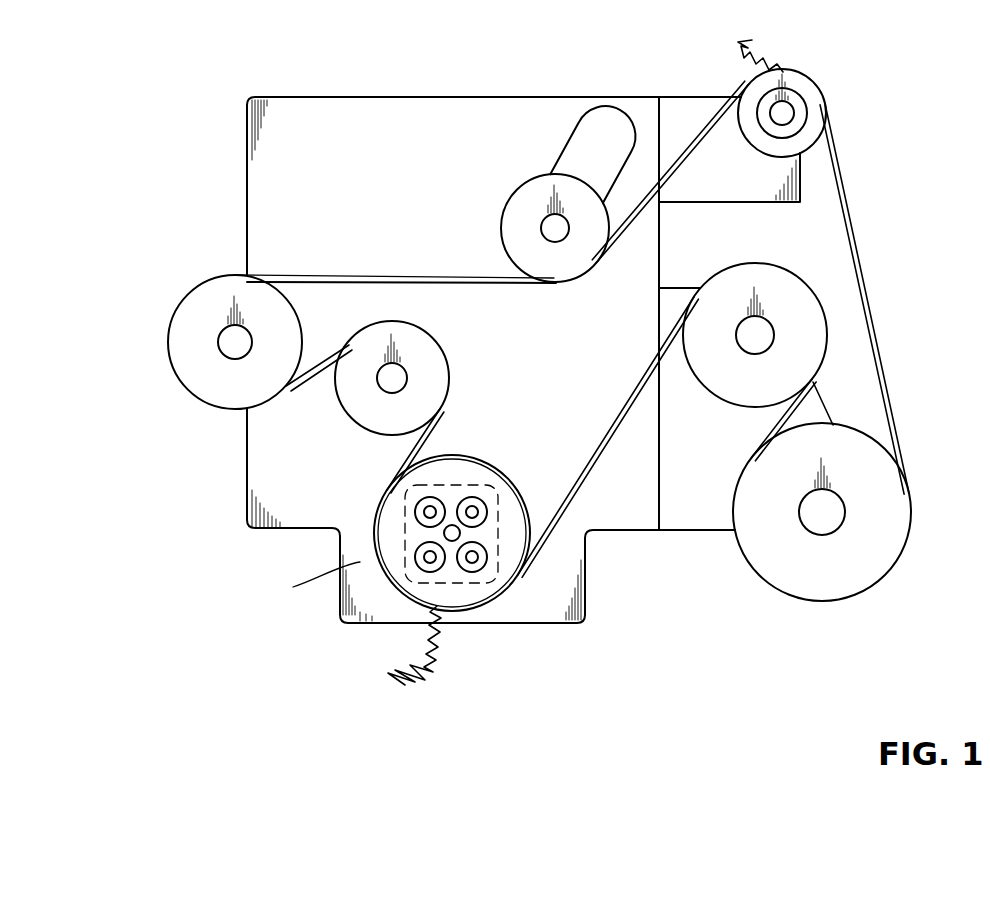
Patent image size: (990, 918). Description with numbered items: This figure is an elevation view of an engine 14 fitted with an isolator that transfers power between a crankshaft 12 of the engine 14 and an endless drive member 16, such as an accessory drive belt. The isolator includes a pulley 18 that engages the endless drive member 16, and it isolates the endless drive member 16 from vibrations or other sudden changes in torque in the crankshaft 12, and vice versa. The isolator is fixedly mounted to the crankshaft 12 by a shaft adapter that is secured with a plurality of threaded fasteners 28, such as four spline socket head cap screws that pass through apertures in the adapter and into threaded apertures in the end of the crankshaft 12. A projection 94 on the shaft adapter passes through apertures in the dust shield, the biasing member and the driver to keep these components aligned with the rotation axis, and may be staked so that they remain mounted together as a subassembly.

The engine 14 is at (355, 92).
The endless drive member 16 is at (312, 275).
The crankshaft 12 is at (399, 520).
The pulley 18 is at (527, 513).
The projection 94 is at (443, 534).
The threaded fasteners 28 is at (421, 566).